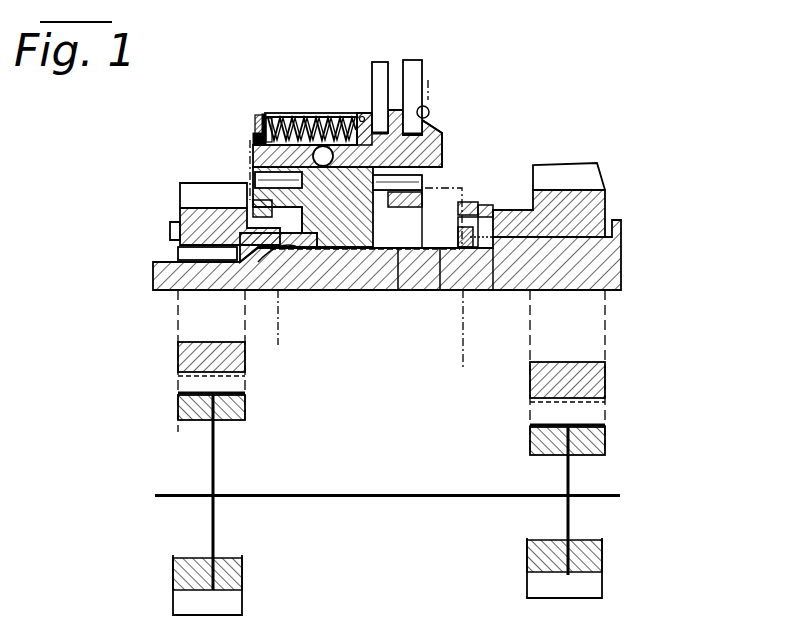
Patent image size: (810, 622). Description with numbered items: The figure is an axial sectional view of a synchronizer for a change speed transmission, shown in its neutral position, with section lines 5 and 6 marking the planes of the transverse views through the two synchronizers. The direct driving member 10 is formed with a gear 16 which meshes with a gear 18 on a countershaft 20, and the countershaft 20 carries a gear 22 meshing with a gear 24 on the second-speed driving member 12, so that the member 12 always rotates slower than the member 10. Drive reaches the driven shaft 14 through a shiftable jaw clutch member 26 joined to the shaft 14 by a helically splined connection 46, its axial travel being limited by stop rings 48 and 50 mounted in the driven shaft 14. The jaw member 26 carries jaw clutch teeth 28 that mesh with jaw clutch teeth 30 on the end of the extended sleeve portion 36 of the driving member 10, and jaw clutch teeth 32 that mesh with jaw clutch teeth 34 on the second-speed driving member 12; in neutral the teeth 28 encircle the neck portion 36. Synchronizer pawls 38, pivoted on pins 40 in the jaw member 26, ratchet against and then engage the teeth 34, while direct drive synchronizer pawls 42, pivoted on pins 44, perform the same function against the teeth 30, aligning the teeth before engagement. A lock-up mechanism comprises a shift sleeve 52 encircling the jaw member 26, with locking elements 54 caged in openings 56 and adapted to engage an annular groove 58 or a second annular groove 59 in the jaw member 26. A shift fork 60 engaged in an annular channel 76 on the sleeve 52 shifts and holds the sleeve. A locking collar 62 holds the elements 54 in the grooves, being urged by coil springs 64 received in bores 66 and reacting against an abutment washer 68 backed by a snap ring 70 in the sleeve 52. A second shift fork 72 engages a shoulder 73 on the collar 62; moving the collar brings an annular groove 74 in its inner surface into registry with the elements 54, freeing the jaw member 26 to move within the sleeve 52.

The section line 5- 5 is at (253, 155).
The section line 6- 6 is at (457, 80).
The direct driving member 10 is at (175, 233).
The second-speed driving member 12 is at (598, 197).
The driven shaft 14 is at (621, 264).
The gear 16 is at (182, 190).
The gear 18 is at (182, 408).
The countershaft 20 is at (380, 494).
The gear 22 is at (607, 433).
The gear 24 is at (586, 170).
The shiftable jaw clutch member 26 is at (398, 262).
The jaw clutch teeth 28 is at (256, 268).
The jaw clutch teeth 30 is at (313, 250).
The jaw clutch teeth 32 is at (398, 192).
The jaw clutch teeth 34 is at (478, 207).
The sleeve portion 36 is at (305, 252).
The synchronizer pawls 38 is at (412, 216).
The pins 40 is at (401, 201).
The direct drive synchronizer pawls 42 is at (258, 210).
The pins 44 is at (256, 180).
The helically splined connection 46 is at (440, 262).
The stop ring 48 is at (320, 224).
The stop ring 50 is at (493, 262).
The shift sleeve 52 is at (443, 130).
The locking elements 54 is at (338, 113).
The openings 56 is at (256, 129).
The annular groove 58 is at (443, 157).
The second annular groove 59 is at (324, 167).
The shift fork 60 is at (417, 60).
The locking collar 62 is at (322, 116).
The coil springs 64 is at (283, 117).
The bores 66 is at (305, 116).
The abutment washer 68 is at (262, 118).
The snap ring 70 is at (253, 140).
The shift fork 72 is at (383, 62).
The shoulder 73 is at (362, 116).
The annular groove 74 is at (360, 113).
The annular channel 76 is at (430, 98).